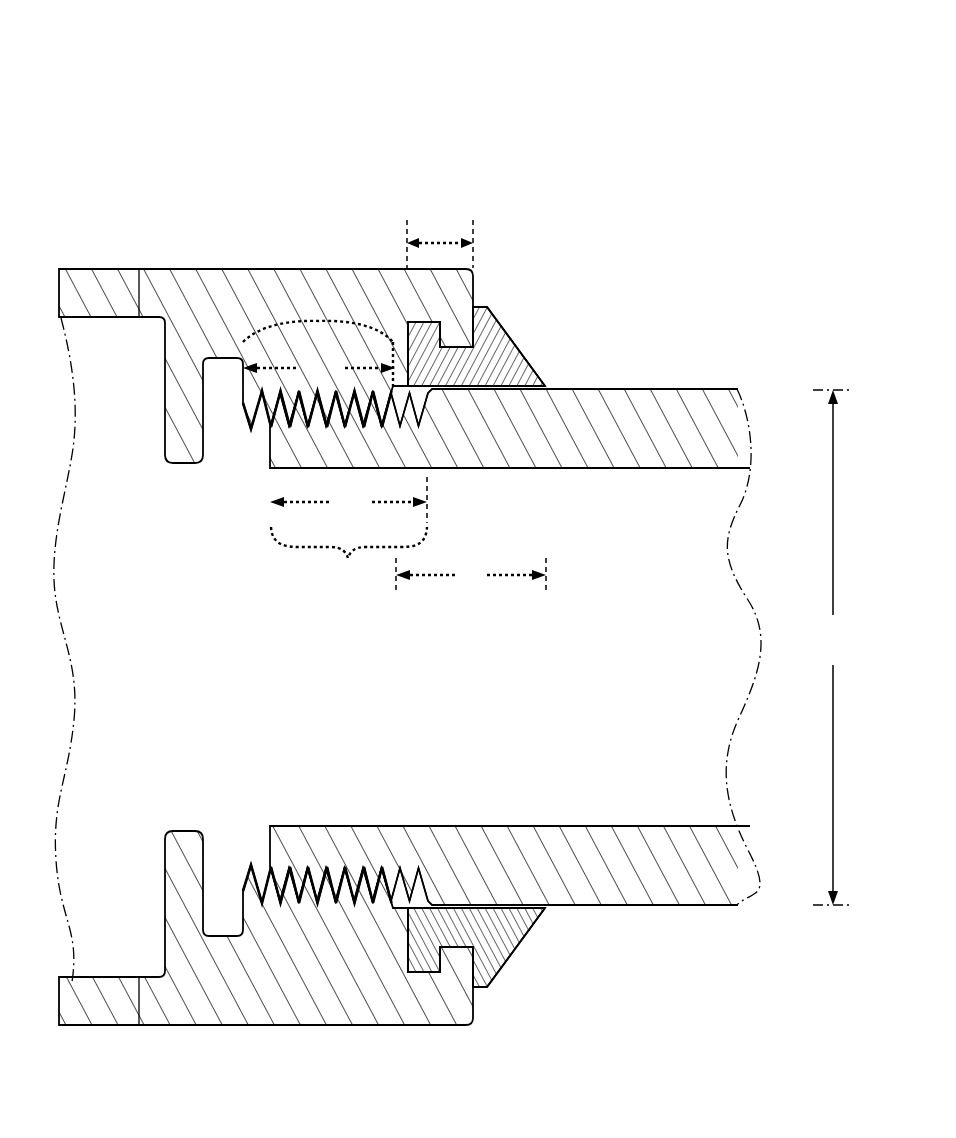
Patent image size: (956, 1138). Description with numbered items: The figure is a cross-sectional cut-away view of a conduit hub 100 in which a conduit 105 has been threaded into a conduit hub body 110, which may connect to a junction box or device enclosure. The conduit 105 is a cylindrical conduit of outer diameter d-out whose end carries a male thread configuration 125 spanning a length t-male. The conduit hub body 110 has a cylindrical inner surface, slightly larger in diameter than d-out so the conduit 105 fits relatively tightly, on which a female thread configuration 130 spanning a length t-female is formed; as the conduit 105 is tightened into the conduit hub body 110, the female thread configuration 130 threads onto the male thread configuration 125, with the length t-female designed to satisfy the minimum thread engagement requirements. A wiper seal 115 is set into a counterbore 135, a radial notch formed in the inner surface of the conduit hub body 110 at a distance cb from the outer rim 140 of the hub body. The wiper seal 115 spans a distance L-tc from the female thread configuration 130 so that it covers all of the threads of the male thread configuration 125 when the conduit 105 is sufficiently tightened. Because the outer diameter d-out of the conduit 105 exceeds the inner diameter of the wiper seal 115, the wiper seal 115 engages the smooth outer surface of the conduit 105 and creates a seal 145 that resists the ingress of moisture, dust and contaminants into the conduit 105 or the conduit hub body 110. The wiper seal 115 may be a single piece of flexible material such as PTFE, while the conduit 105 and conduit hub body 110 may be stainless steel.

The conduit hub 100 is at (91, 122).
The conduit 105 is at (665, 376).
The conduit hub body 110 is at (270, 256).
The wiper seal 115 is at (521, 330).
The male thread configuration 125 is at (348, 574).
The female thread configuration 130 is at (319, 308).
The counterbore 135 is at (400, 334).
The outer rim 140 is at (484, 286).
The seal 145 is at (552, 367).